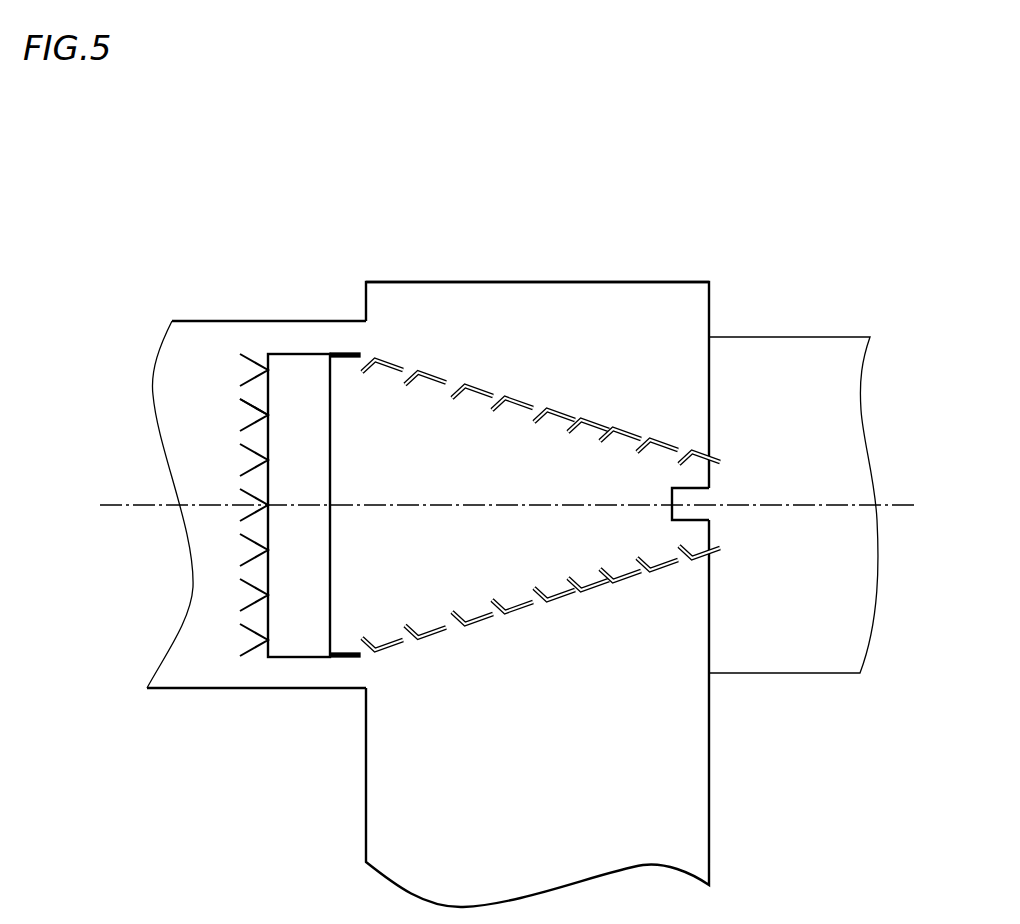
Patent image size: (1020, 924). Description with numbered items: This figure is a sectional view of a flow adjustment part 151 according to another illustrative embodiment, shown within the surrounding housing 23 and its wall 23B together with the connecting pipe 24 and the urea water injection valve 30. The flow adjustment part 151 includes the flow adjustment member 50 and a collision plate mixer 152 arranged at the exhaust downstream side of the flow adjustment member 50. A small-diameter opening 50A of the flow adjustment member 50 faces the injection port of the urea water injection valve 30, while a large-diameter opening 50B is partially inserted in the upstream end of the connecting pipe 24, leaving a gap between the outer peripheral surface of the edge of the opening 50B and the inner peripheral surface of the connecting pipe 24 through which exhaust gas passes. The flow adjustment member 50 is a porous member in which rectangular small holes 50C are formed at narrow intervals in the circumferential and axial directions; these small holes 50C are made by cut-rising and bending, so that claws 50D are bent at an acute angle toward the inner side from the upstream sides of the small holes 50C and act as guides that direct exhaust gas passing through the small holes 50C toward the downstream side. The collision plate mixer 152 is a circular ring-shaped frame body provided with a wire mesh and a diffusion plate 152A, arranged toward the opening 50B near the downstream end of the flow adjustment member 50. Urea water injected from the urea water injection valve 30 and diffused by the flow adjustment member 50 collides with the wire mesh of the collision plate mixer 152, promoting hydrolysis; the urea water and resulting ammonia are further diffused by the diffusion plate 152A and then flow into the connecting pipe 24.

The housing 23 is at (679, 262).
The housing top wall 23B is at (607, 282).
The connecting pipe 24 is at (245, 688).
The urea water injection valve 30 is at (690, 488).
The flow adjustment member 50 is at (616, 468).
The small-diameter opening 50A is at (709, 535).
The large-diameter opening 50B is at (330, 365).
The small hole 50C is at (466, 385).
The claw 50D is at (547, 409).
The flow adjustment part 151 is at (352, 343).
The collision plate mixer 152 is at (278, 354).
The diffusion plate 152A is at (247, 383).